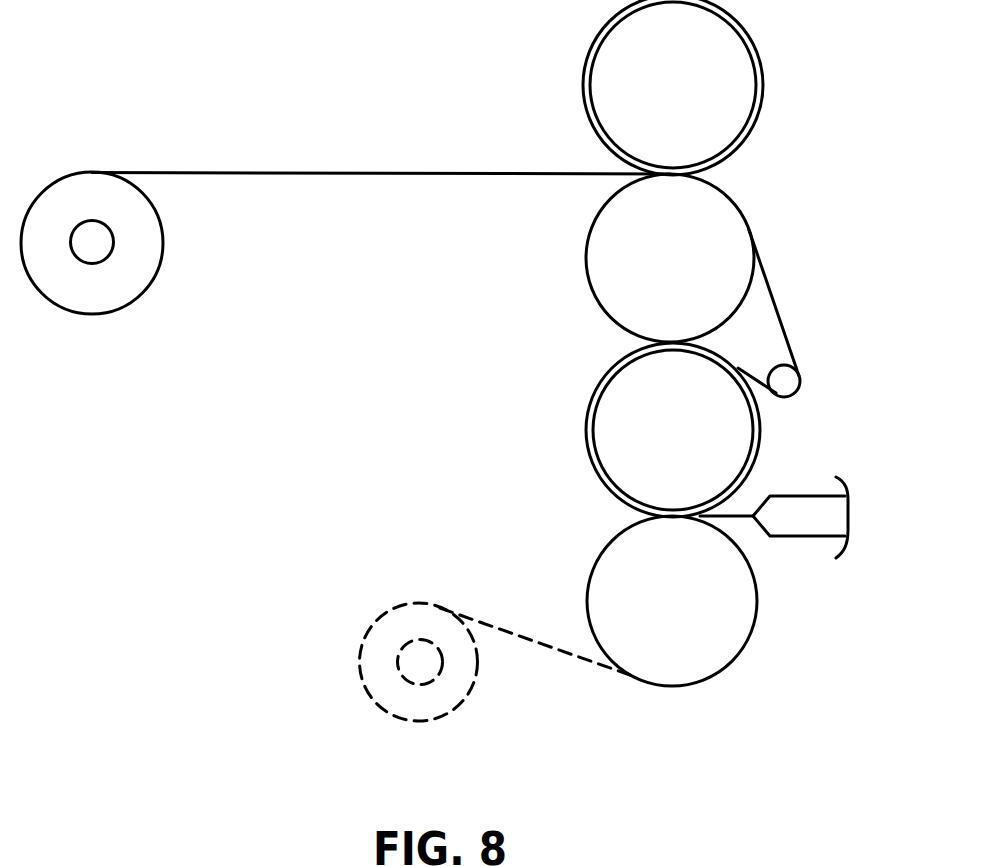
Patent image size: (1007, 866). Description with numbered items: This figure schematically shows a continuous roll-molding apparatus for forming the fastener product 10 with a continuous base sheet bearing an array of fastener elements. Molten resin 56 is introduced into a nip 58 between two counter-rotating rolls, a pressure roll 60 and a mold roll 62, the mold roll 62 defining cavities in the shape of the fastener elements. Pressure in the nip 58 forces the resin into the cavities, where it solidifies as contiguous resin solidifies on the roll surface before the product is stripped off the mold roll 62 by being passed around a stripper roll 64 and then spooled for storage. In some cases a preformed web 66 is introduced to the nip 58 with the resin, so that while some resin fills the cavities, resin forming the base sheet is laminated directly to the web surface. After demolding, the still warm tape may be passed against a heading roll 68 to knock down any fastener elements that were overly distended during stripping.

The fastener product 10 is at (306, 170).
The molten resin 56 is at (745, 514).
The nip 58 is at (623, 513).
The pressure roll 60 is at (672, 601).
The mold roll 62 is at (673, 430).
The stripper roll 64 is at (800, 384).
The preformed web 66 is at (532, 641).
The heading roll 68 is at (673, 87).